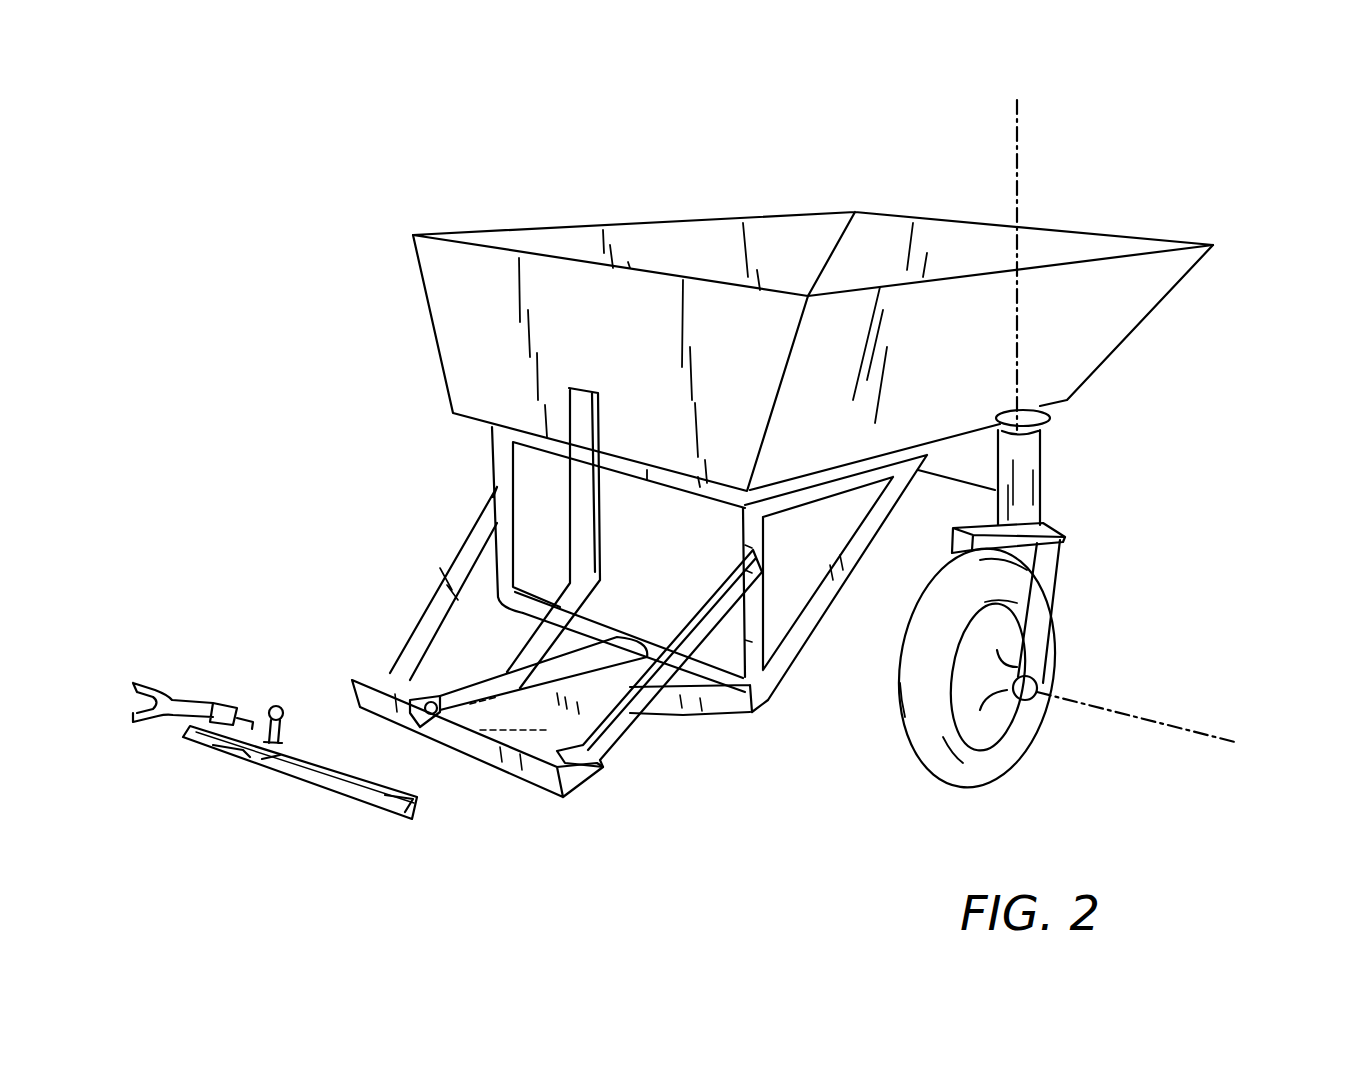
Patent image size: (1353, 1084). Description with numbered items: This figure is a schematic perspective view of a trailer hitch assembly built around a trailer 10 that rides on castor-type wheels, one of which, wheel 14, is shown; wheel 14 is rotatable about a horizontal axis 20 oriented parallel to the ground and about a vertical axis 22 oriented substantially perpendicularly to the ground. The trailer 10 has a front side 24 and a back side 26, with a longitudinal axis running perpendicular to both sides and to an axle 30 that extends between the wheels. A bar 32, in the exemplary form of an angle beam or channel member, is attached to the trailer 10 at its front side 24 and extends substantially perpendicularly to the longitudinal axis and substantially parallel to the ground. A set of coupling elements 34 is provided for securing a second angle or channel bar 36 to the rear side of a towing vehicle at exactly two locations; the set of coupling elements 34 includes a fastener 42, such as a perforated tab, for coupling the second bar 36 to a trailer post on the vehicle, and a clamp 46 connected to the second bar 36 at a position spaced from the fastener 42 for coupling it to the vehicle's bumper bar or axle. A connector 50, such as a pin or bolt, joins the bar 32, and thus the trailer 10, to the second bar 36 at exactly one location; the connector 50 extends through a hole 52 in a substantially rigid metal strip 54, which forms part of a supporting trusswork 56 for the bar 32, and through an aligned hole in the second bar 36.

The trailer 10 is at (409, 289).
The castor-type wheel 14 is at (1053, 610).
The horizontal axis 20 is at (1241, 744).
The vertical axis 22 is at (1018, 172).
The front side 24 is at (465, 377).
The back side 26 is at (1127, 233).
The axle 30 is at (988, 470).
The bar 32 is at (547, 787).
The set of coupling elements 34 is at (383, 632).
The second bar 36 is at (363, 780).
The fastener 42 is at (258, 770).
The clamp 46 is at (170, 737).
The connector 50 is at (292, 688).
The hole 52 is at (387, 718).
The metal strip 54 is at (460, 713).
The supporting trusswork 56 is at (694, 727).